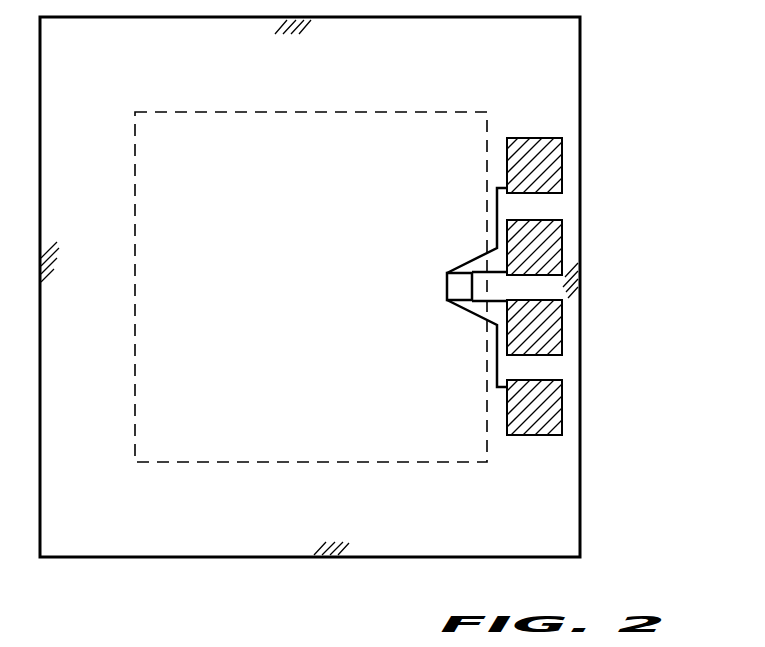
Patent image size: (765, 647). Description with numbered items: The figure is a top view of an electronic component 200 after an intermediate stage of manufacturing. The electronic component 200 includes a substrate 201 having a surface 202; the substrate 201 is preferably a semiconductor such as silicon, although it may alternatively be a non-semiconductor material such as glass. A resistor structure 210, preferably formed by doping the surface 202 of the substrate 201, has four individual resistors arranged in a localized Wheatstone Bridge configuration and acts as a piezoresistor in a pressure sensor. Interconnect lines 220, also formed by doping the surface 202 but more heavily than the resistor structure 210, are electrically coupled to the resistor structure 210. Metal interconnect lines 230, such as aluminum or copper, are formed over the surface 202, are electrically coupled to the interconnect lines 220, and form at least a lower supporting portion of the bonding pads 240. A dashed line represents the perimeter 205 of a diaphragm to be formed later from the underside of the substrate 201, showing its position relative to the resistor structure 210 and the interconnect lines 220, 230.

The electronic component 200 is at (400, 623).
The substrate 201 is at (165, 557).
The surface 202 is at (122, 522).
The perimeter 205 is at (281, 111).
The resistor structure 210 is at (447, 287).
The interconnect lines 220 is at (485, 253).
The interconnect lines 230 is at (497, 190).
The bonding pads 240 is at (543, 139).